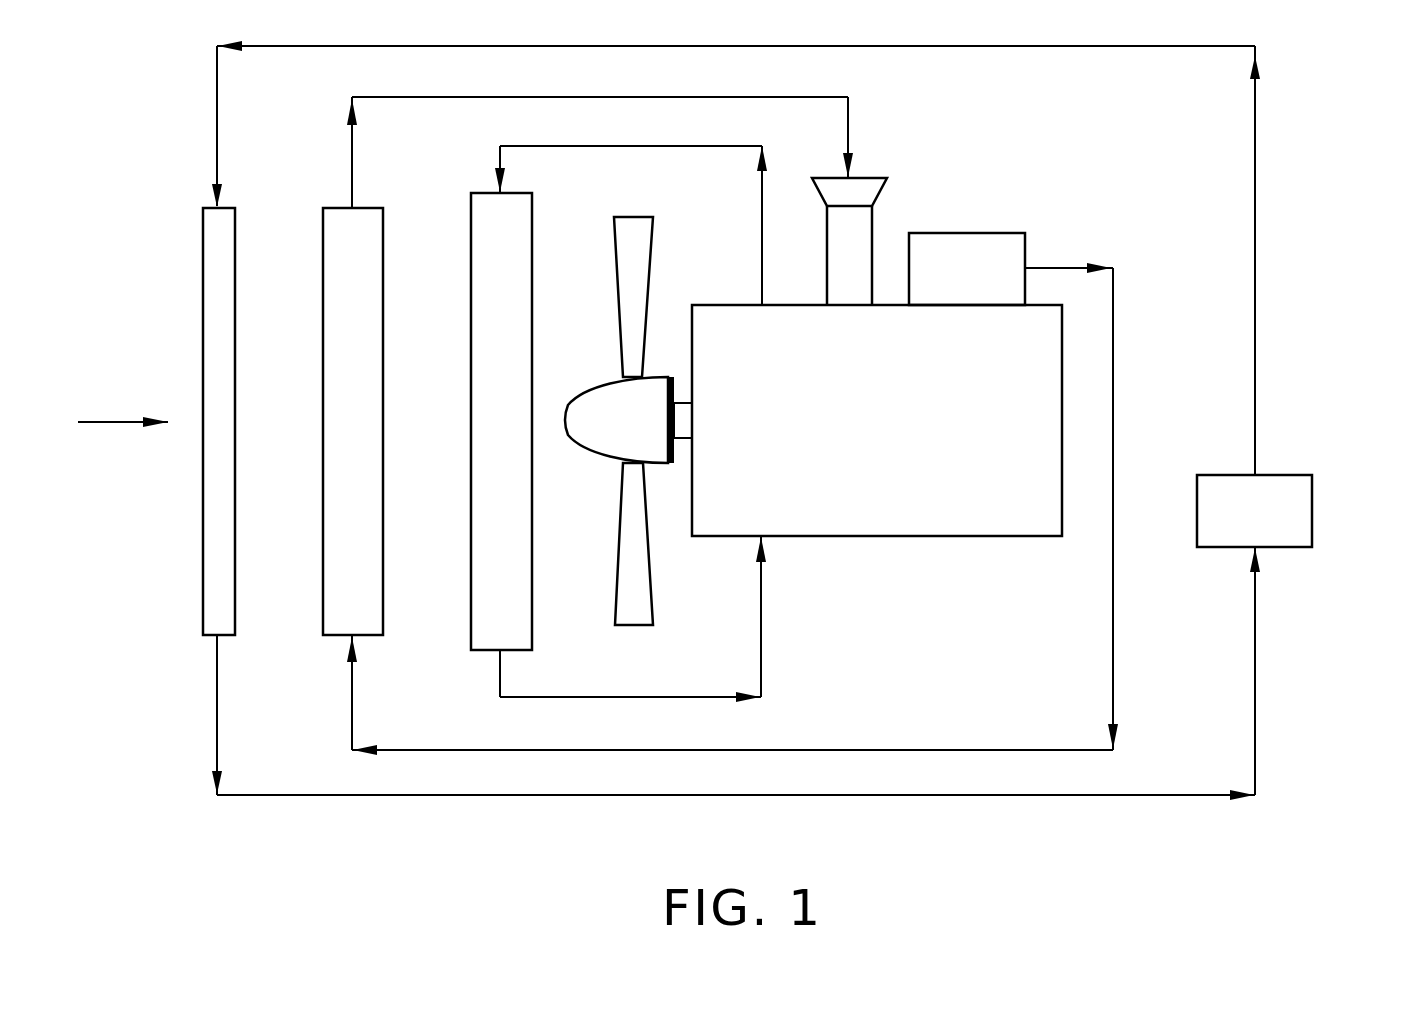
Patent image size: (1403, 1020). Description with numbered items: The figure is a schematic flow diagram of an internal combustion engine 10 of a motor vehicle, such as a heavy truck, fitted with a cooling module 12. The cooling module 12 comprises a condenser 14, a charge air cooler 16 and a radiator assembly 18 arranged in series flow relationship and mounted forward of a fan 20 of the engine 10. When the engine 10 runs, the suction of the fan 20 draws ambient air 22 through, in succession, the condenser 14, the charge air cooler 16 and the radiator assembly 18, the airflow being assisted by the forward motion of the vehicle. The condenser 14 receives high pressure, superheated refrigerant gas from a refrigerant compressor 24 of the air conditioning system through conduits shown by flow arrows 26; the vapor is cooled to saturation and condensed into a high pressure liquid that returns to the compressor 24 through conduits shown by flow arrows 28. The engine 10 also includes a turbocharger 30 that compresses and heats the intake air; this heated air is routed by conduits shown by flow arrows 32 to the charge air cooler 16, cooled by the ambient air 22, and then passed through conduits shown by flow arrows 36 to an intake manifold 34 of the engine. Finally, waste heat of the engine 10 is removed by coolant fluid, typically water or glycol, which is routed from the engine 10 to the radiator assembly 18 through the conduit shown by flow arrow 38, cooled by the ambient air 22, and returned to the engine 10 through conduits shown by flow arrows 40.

The internal combustion engine 10 is at (863, 441).
The cooling module 12 is at (366, 812).
The condenser 14 is at (203, 523).
The charge air cooler 16 is at (323, 358).
The radiator assembly 18 is at (471, 355).
The fan 20 is at (573, 443).
The ambient air 22 is at (98, 422).
The refrigerant compressor 24 is at (1312, 512).
The flow arrows 26 is at (216, 125).
The flow arrows 28 is at (217, 691).
The turbocharger 30 is at (982, 233).
The flow arrows 32 is at (1113, 605).
The intake manifold 34 is at (870, 178).
The flow arrows 36 is at (351, 165).
The flow arrow 38 is at (563, 146).
The flow arrows 40 is at (761, 628).